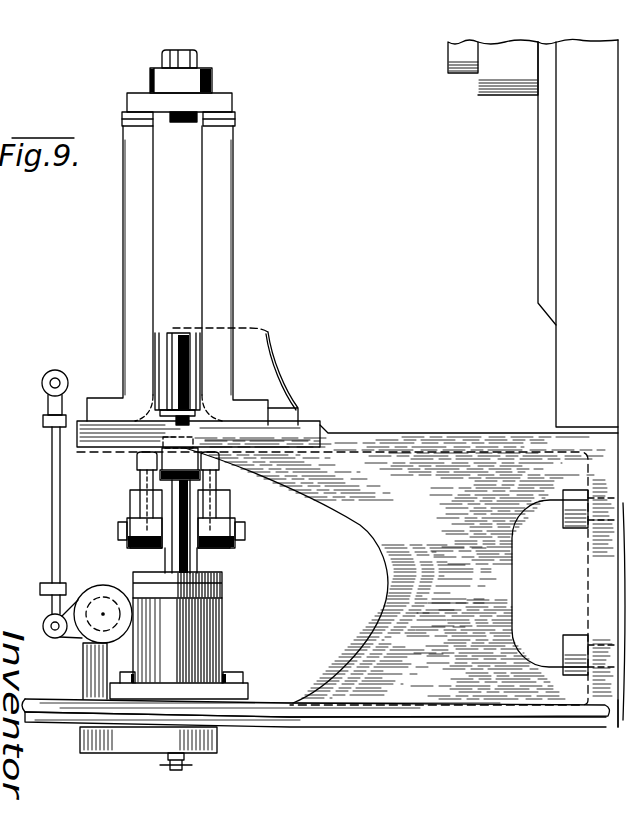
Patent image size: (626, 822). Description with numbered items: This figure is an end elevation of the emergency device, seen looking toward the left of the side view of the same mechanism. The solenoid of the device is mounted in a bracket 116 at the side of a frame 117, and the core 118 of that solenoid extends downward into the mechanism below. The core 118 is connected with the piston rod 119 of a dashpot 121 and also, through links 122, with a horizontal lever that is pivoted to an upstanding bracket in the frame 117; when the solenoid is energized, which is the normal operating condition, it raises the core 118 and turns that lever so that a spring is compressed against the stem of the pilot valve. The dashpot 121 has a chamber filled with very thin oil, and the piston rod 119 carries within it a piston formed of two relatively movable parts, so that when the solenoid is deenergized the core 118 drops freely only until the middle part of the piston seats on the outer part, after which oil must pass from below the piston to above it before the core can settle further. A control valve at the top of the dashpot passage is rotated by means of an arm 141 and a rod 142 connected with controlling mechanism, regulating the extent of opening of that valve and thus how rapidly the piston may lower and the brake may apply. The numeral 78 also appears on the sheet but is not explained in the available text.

The bracket 116 is at (233, 256).
The frame 117 is at (100, 421).
The core 118 is at (192, 372).
The piston rod 119 is at (186, 560).
The dashpot 121 is at (195, 622).
The links 122 is at (207, 508).
The arm 141 is at (78, 640).
The rod 142 is at (62, 497).
The frame 78 is at (625, 762).